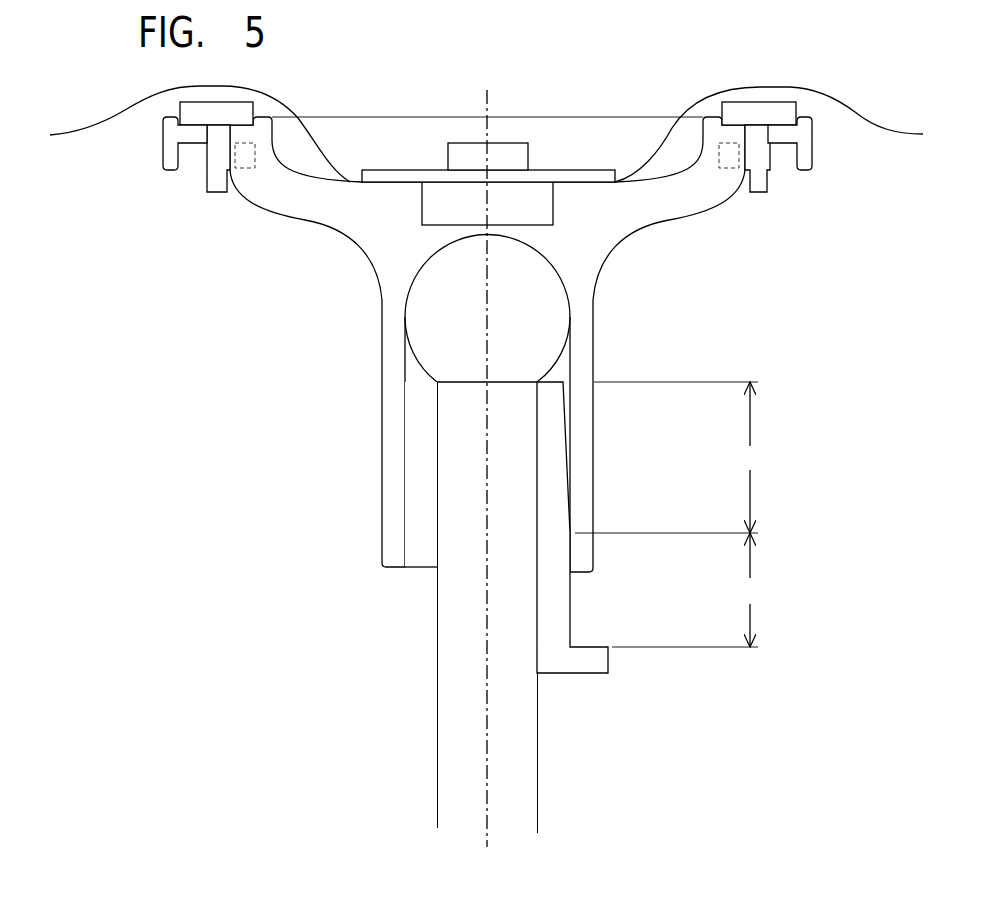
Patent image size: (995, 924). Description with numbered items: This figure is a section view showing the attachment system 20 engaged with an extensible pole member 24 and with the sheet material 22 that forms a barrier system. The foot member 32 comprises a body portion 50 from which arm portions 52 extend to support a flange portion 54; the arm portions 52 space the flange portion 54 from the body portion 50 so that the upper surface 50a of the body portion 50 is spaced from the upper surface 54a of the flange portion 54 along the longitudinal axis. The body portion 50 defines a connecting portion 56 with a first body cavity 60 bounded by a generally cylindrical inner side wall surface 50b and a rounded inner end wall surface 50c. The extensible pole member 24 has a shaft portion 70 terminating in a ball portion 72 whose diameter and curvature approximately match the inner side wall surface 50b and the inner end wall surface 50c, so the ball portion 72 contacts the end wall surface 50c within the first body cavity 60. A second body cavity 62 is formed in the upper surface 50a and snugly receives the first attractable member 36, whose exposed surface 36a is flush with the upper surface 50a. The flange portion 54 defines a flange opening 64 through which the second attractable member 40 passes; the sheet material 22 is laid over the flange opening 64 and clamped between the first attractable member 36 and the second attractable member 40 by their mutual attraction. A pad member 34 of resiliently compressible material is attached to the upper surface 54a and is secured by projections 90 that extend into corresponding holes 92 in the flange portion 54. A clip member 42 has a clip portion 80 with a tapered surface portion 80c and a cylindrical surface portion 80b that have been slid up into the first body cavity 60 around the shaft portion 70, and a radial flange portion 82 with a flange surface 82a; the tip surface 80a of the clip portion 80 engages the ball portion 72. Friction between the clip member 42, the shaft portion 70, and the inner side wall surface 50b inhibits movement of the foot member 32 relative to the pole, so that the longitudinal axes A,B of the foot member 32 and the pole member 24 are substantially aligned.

The attachment system 20 is at (232, 451).
The sheet material 22 is at (137, 107).
The extensible pole member 24 is at (415, 758).
The foot member 32 is at (380, 535).
The pad member 34 is at (767, 108).
The first attractable member 36 is at (452, 192).
The exposed surface 36a is at (537, 182).
The second attractable member 40 is at (397, 173).
The clip member 42 is at (604, 624).
The body portion 50 is at (599, 282).
The upper surface 50a is at (643, 174).
The inner side wall surface 50b is at (407, 475).
The inner end wall surface 50c is at (425, 267).
The arm portion 52 is at (508, 150).
The flange portion 54 is at (806, 142).
The upper surface 54a is at (710, 117).
The connecting portion 56 is at (599, 334).
The first body cavity 60 is at (417, 450).
The second body cavity 62 is at (420, 207).
The flange opening 64 is at (354, 103).
The shaft portion 70 is at (452, 691).
The ball portion 72 is at (430, 337).
The clip portion 80 is at (591, 597).
The tip surface 80a is at (558, 381).
The cylindrical surface portion 80b is at (688, 590).
The tapered surface portion 80c is at (669, 457).
The radial flange portion 82 is at (597, 657).
The flange surface 82a is at (583, 673).
The projection 90 is at (757, 165).
The hole 92 is at (766, 150).
The longitudinal axes A,B is at (488, 757).